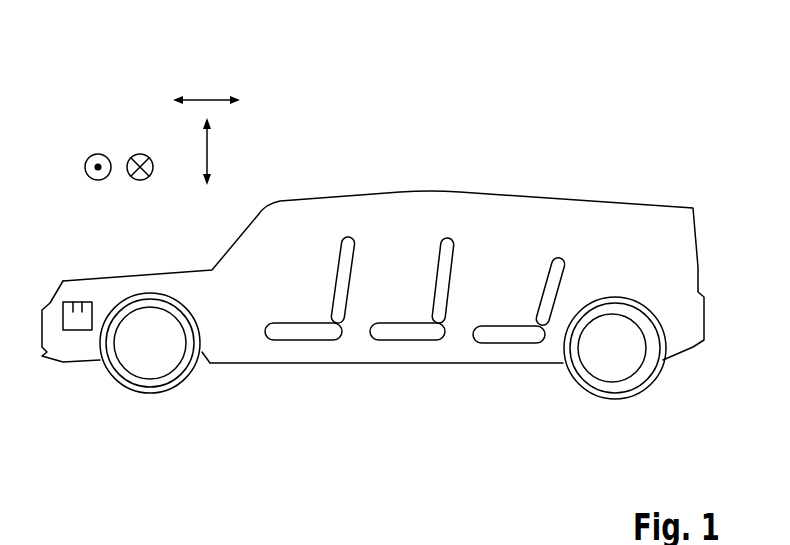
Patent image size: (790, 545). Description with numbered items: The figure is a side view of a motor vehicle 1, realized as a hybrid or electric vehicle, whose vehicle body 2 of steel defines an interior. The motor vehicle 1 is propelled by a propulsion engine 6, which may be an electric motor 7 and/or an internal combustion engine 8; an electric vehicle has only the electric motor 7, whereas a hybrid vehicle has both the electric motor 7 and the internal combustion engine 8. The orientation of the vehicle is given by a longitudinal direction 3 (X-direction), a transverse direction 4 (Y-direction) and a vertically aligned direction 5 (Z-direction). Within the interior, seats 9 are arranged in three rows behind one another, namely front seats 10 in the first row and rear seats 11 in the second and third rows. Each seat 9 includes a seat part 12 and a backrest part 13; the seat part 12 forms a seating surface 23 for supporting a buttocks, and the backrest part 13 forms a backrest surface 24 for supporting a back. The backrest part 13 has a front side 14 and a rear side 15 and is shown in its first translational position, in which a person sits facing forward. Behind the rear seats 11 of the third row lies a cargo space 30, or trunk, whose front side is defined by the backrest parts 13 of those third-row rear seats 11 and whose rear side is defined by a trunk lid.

The motor vehicle 1 is at (400, 286).
The vehicle body 2 is at (675, 207).
The longitudinal direction 3 is at (207, 100).
The transverse direction 4 is at (98, 154).
The vertically aligned direction 5 is at (208, 152).
The propulsion engine 6 is at (86, 274).
The electric motor 7 is at (73, 302).
The internal combustion engine 8 is at (82, 302).
The seat 9 is at (449, 283).
The front seat 10 is at (353, 218).
The rear seat 11 is at (455, 218).
The seat part 12 is at (415, 284).
The backrest part 13 is at (439, 231).
The front side 14 is at (439, 265).
The rear side 15 is at (456, 257).
The seating surface 23 is at (280, 322).
The backrest surface 24 is at (419, 231).
The cargo space 30 is at (620, 255).